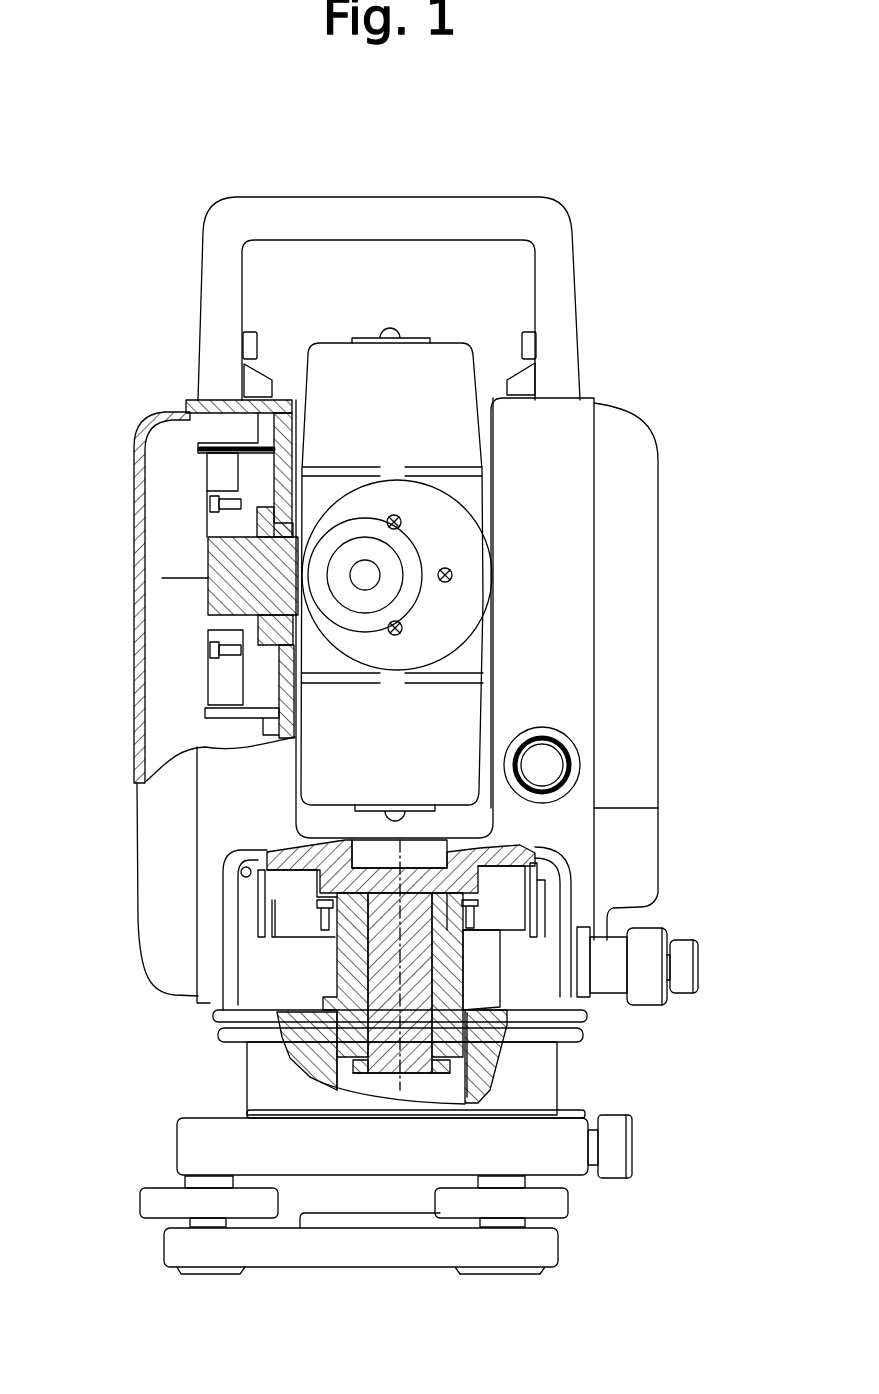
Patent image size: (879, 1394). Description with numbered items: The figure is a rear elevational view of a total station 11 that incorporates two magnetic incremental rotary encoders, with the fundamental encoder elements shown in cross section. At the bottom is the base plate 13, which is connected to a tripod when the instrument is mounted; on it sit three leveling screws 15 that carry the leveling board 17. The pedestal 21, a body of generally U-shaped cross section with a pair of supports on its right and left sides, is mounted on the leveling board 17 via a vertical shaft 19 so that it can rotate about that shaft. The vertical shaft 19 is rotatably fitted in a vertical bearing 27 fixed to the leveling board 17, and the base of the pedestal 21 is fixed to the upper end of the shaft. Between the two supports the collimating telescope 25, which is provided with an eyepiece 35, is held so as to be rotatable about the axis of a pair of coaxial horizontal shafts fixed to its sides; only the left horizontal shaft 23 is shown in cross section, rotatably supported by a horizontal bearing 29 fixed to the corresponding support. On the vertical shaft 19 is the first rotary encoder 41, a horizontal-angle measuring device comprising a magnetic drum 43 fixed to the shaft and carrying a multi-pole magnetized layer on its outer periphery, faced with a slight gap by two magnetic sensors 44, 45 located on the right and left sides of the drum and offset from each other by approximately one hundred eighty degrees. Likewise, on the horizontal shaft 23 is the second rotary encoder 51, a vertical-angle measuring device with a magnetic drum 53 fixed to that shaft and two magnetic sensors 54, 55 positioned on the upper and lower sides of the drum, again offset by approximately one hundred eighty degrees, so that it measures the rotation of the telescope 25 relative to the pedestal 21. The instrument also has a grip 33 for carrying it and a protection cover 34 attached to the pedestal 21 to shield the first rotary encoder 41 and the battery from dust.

The total station 11 is at (179, 249).
The base plate 13 is at (543, 1248).
The leveling screws 15 is at (172, 1203).
The leveling board 17 is at (572, 1165).
The vertical shaft 19 is at (408, 1037).
The pedestal 21 is at (193, 408).
The horizontal shaft 23 is at (150, 600).
The collimating telescope 25 is at (445, 535).
The vertical bearing 27 is at (345, 957).
The horizontal bearing 29 is at (213, 548).
The grip 33 is at (560, 253).
The protection cover 34 is at (152, 418).
The eyepiece 35 is at (372, 584).
The first magnetic incremental rotary encoder 41 is at (261, 959).
The magnetic drum 43 is at (502, 918).
The magnetic sensor 44 is at (272, 862).
The magnetic sensor 45 is at (533, 912).
The second magnetic incremental rotary encoder 51 is at (180, 661).
The magnetic drum 53 is at (215, 475).
The magnetic sensor 54 is at (208, 443).
The magnetic sensor 55 is at (205, 709).